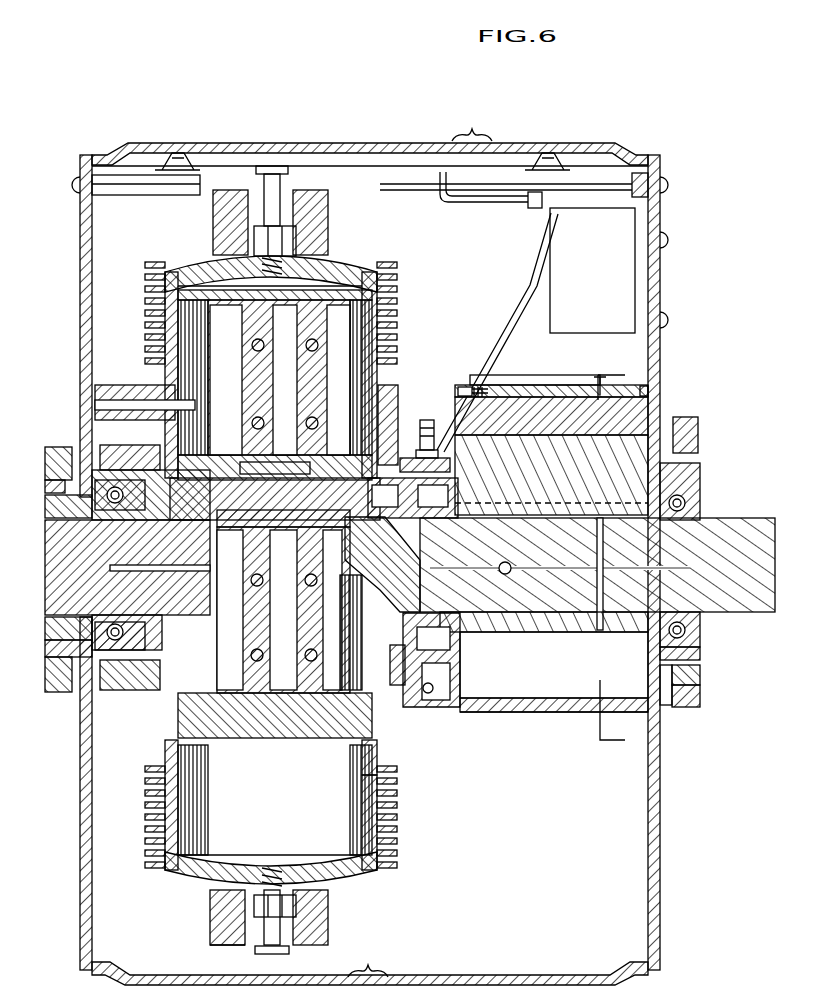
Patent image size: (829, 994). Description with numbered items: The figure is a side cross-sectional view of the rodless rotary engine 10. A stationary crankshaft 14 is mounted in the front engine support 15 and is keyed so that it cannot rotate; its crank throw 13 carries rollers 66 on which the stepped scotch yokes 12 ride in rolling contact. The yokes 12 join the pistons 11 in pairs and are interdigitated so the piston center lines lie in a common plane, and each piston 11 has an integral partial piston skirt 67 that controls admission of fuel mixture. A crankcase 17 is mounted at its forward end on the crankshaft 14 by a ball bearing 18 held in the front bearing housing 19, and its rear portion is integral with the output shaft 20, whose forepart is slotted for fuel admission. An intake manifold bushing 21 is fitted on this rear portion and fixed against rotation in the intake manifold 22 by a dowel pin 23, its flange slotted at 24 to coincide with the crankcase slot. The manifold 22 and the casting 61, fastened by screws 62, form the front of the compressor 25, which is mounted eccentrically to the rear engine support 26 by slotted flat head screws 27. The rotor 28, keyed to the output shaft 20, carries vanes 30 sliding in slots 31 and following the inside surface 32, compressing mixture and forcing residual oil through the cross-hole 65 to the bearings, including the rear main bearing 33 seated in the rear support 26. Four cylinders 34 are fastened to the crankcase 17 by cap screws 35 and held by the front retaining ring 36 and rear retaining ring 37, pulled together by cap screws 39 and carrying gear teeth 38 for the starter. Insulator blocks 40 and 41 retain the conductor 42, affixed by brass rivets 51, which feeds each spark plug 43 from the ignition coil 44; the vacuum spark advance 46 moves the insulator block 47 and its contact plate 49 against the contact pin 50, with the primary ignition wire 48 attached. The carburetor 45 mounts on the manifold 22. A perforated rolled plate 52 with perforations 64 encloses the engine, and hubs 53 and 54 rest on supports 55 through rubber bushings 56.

The rodless rotary engine 10 is at (125, 108).
The piston 11 is at (236, 308).
The stepped scotch yoke 12 is at (240, 456).
The crank throw 13 is at (210, 442).
The crankshaft 14 is at (46, 548).
The front engine support 15 is at (80, 816).
The crankcase 17 is at (380, 738).
The ball bearing 18 is at (114, 478).
The front bearing housing 19 is at (136, 452).
The output shaft 20 is at (745, 526).
The intake manifold bushing 21 is at (413, 498).
The intake manifold 22 is at (430, 694).
The dowel pin 23 is at (430, 512).
The slot 24 is at (416, 636).
The compressor 25 is at (580, 713).
The rear engine support 26 is at (661, 800).
The slotted flat head screw 27 is at (656, 390).
The rotor 28 is at (516, 626).
The vane 30 is at (642, 412).
The slot 31 is at (627, 665).
The inside surface 32 is at (564, 698).
The rear main bearing 33 is at (700, 502).
The cylinder 34 is at (398, 262).
The cap screw 35 is at (156, 688).
The front retaining ring 36 is at (210, 912).
The rear retaining ring 37 is at (330, 916).
The gear teeth 38 is at (220, 947).
The cap screw 39 is at (262, 930).
The insulator block 40 is at (139, 190).
The insulator block 41 is at (605, 170).
The conductor 42 is at (272, 162).
The spark plug 43 is at (282, 942).
The ignition coil 44 is at (608, 374).
The carburetor 45 is at (528, 376).
The vacuum spark advance 46 is at (426, 418).
The insulator block 47 is at (436, 448).
The primary ignition wire 48 is at (541, 300).
The contact plate 49 is at (392, 440).
The contact pin 50 is at (408, 455).
The brass rivet 51 is at (176, 150).
The perforated rolled plate 52 is at (418, 135).
The hub 53 is at (45, 632).
The hub 54 is at (700, 652).
The support 55 is at (55, 693).
The rubber bushing 56 is at (45, 655).
The casting 61 is at (460, 702).
The screw 62 is at (462, 386).
The perforation 64 is at (420, 545).
The cross-hole 65 is at (600, 630).
The roller 66 is at (292, 460).
The partial piston skirt 67 is at (356, 578).